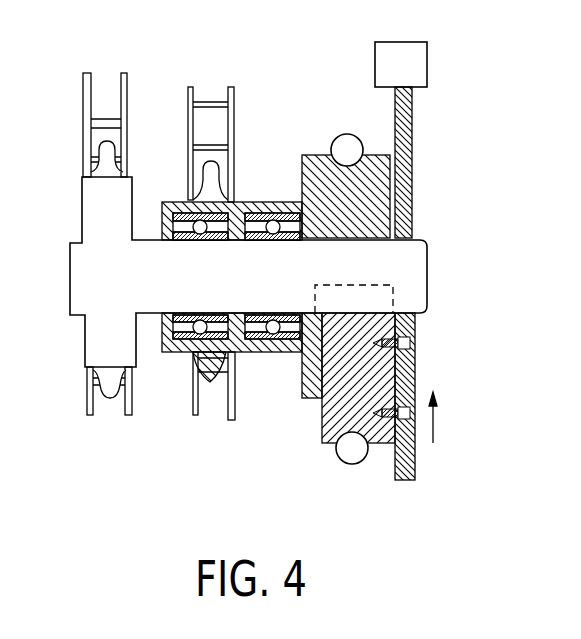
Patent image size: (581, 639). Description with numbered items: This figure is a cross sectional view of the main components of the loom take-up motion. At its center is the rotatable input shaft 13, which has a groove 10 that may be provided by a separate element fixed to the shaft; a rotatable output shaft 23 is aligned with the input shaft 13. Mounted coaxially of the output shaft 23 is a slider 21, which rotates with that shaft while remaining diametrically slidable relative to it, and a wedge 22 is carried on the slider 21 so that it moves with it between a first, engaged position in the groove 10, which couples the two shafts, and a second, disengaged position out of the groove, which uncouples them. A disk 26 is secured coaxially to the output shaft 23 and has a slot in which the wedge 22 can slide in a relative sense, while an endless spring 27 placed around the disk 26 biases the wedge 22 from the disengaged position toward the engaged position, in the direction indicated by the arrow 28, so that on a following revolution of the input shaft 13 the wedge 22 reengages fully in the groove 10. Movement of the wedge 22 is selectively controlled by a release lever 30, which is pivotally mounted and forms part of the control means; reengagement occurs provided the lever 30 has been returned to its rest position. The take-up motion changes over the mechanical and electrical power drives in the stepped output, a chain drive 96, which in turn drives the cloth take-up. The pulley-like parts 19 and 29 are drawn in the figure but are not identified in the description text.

The groove 10 is at (362, 287).
The input shaft 13 is at (90, 264).
The first pulley 19 is at (91, 165).
The slider 21 is at (405, 131).
The wedge 22 is at (333, 410).
The output shaft 23 is at (265, 204).
The disk 26 is at (365, 200).
The endless spring 27 is at (339, 134).
The arrow 28 is at (433, 422).
The lower bearing housing pulley 29 is at (208, 368).
The release lever 30 is at (418, 62).
The chain drive 96 is at (215, 100).